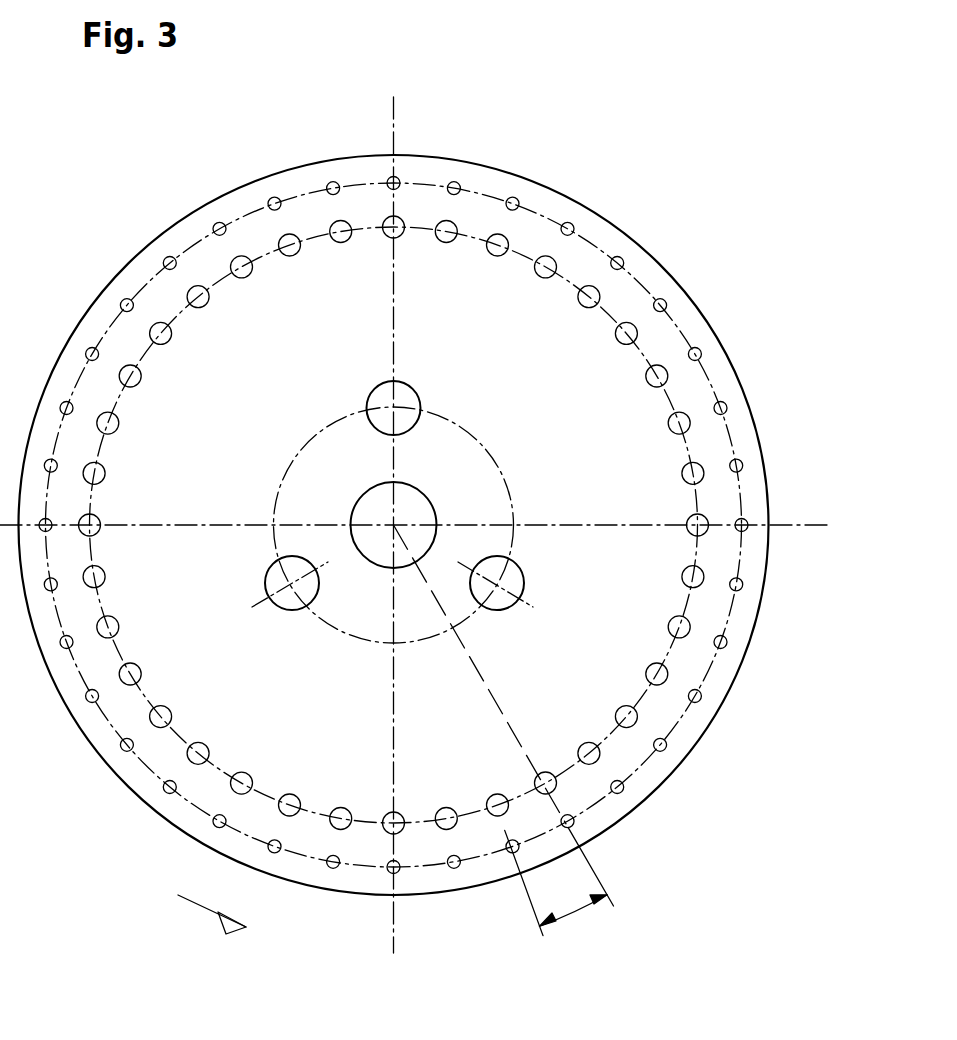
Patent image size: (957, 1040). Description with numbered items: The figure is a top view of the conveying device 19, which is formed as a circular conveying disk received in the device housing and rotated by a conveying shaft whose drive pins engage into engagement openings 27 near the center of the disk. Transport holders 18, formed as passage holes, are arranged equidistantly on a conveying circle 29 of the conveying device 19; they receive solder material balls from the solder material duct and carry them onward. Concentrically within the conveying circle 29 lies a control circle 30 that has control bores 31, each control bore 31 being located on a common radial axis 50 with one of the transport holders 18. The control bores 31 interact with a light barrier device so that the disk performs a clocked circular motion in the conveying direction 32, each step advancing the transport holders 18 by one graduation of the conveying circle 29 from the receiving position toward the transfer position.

The transport holders 18 is at (335, 869).
The conveying device 19 is at (418, 907).
The engagement openings 27 is at (292, 610).
The conveying circle 29 is at (740, 567).
The control circle 30 is at (710, 517).
The control bores 31 is at (557, 780).
The conveying direction 32 is at (200, 910).
The common radial axis 50 is at (610, 892).